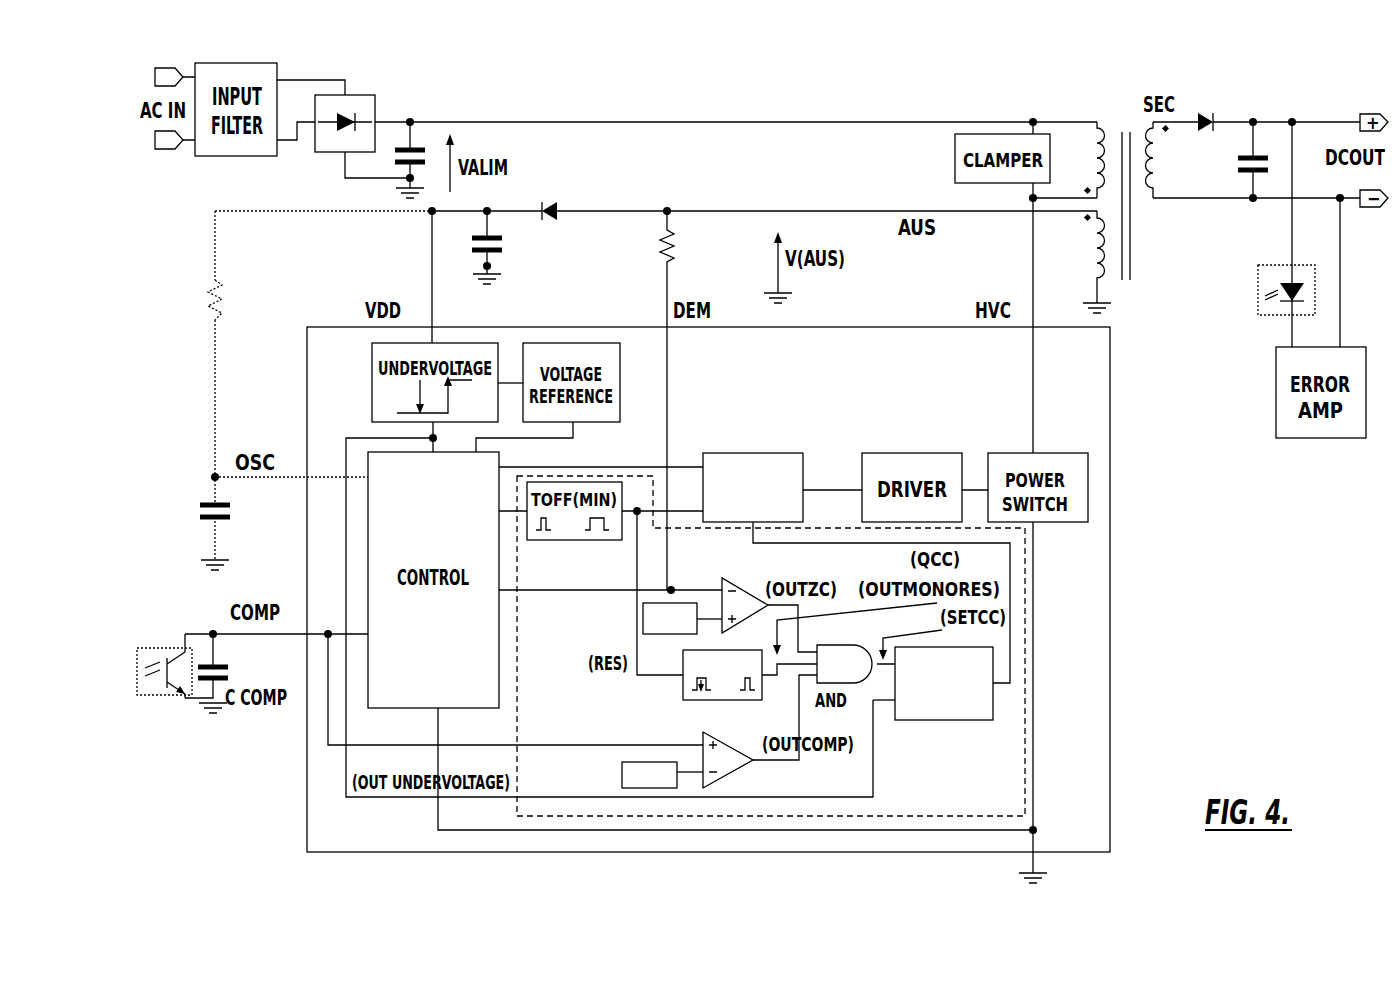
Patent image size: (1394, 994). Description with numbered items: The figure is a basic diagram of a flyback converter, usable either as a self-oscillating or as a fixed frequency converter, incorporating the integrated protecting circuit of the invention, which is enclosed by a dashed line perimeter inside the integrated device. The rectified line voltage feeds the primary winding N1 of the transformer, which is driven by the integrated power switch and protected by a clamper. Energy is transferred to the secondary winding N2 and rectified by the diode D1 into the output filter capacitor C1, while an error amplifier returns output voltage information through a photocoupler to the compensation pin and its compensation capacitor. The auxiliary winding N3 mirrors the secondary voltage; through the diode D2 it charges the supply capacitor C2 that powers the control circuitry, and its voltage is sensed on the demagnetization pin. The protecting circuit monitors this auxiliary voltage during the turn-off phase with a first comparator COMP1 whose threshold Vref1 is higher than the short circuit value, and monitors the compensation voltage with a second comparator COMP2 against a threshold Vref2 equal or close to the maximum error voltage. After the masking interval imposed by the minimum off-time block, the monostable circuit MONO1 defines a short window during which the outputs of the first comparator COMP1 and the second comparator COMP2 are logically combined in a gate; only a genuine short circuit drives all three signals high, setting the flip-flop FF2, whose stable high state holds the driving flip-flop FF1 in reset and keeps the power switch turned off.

The diode D1 is at (1199, 105).
The diode D2 is at (542, 197).
The output filter capacitor C1 is at (1236, 160).
The supply capacitor C2 is at (499, 247).
The primary winding N1 is at (1080, 160).
The secondary winding N2 is at (1166, 160).
The auxiliary winding N3 is at (1087, 262).
The driving flip-flop FF1 is at (753, 488).
The flip-flop FF2 is at (944, 684).
The first comparator COMP1 is at (731, 591).
The second comparator COMP2 is at (723, 746).
The monostable circuit MONO1 is at (750, 675).
The first reference threshold Vref1 is at (682, 618).
The second reference threshold Vref2 is at (662, 775).